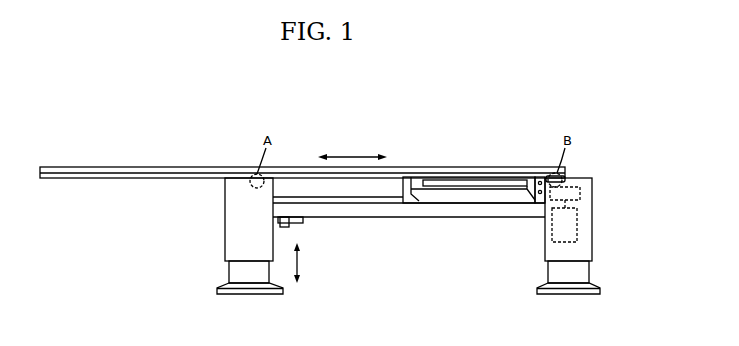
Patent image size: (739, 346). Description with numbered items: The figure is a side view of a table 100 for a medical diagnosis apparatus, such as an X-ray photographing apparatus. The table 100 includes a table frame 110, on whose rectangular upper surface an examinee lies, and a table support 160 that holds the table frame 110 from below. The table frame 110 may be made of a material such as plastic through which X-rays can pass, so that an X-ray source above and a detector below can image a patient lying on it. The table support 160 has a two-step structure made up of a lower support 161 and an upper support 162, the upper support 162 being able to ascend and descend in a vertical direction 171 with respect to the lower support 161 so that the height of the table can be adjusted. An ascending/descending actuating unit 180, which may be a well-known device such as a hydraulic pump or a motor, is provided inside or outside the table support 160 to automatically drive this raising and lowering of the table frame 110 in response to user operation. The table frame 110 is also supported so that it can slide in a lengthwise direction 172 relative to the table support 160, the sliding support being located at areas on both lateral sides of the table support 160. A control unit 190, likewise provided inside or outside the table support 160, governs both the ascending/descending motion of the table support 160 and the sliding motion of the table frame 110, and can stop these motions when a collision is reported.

The table for a medical diagnosis apparatus 100 is at (547, 94).
The table frame 110 is at (130, 180).
The table support 160 is at (162, 256).
The lower support 161 is at (232, 273).
The upper support 162 is at (229, 234).
The vertical direction 171 is at (302, 265).
The lengthwise direction 172 is at (354, 155).
The ascending/descending actuating unit 180 is at (581, 188).
The control unit 190 is at (578, 215).